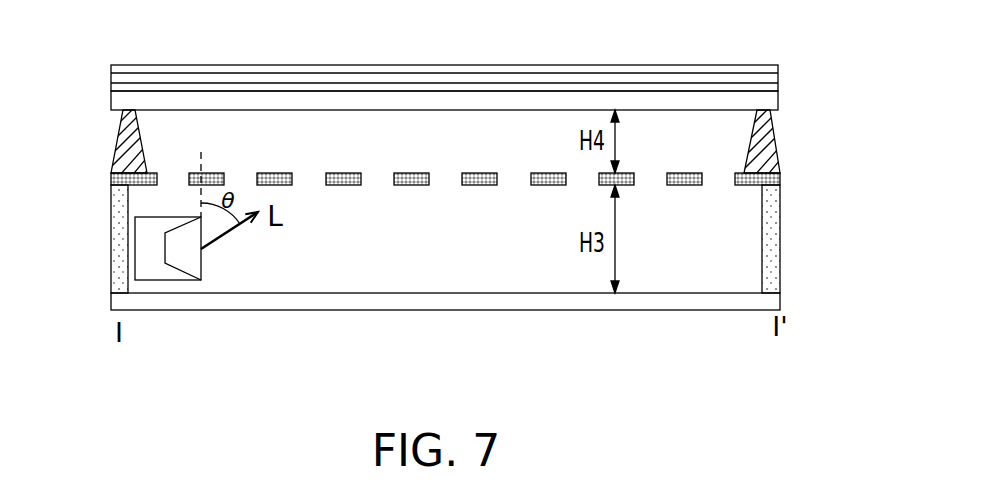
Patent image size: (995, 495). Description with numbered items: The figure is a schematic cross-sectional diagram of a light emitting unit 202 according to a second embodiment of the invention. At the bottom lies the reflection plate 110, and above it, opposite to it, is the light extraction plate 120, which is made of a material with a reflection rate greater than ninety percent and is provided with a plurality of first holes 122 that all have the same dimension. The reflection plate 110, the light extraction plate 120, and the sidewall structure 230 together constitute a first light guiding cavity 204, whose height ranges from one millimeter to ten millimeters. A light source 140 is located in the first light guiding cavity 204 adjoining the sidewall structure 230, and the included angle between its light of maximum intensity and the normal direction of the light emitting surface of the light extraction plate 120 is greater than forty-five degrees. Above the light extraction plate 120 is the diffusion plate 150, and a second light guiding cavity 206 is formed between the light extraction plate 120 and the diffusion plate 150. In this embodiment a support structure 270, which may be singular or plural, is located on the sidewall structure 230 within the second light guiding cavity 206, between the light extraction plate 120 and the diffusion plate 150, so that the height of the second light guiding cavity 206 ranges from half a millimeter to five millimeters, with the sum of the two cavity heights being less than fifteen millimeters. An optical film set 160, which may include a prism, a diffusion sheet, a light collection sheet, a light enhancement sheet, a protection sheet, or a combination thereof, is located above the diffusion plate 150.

The reflection plate 110 is at (770, 298).
The light extraction plate 120 is at (760, 178).
The first holes 122 is at (722, 184).
The light source 140 is at (148, 250).
The diffusion plate 150 is at (770, 100).
The optical film set 160 is at (784, 91).
The light emitting unit 202 is at (852, 392).
The first light guiding cavity 204 is at (448, 256).
The second light guiding cavity 206 is at (403, 125).
The sidewall structure 230 is at (770, 255).
The support structure 270 is at (766, 138).